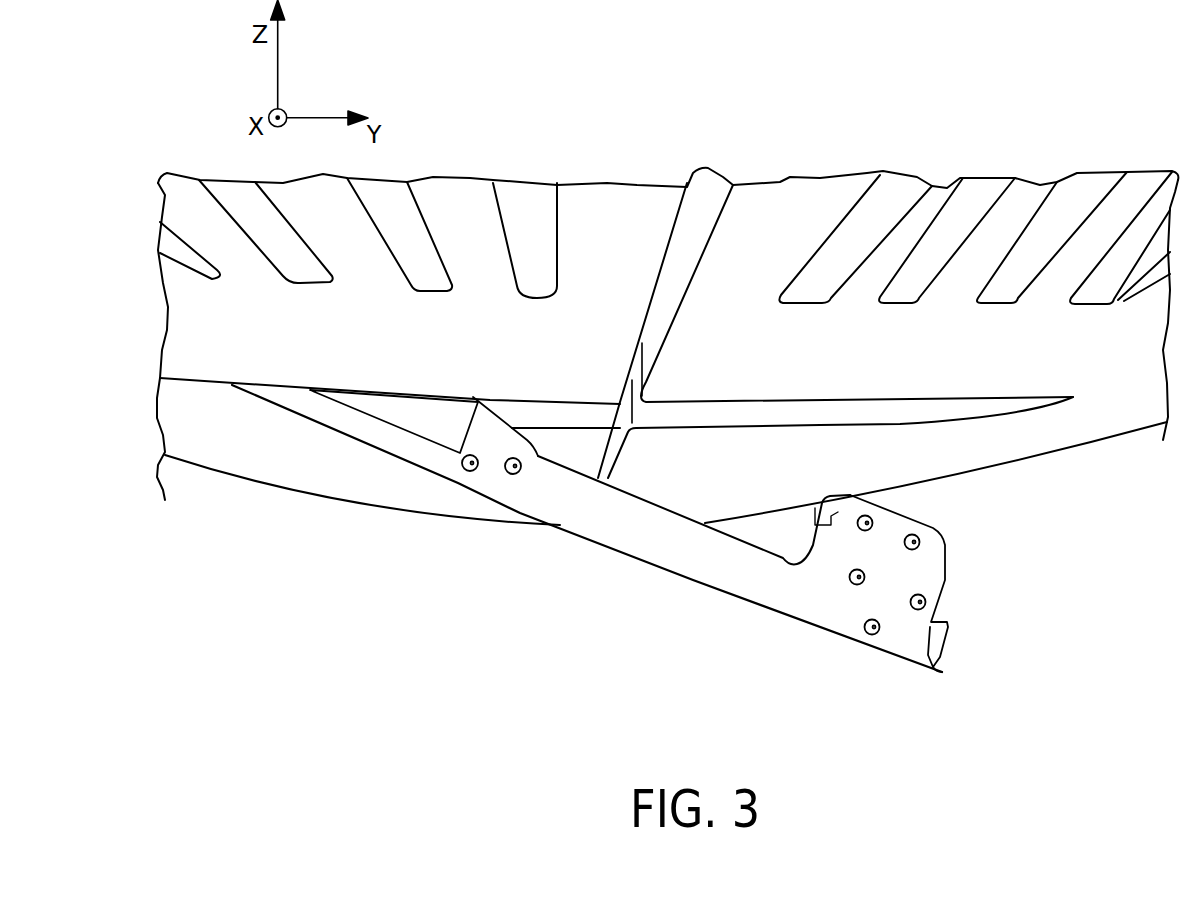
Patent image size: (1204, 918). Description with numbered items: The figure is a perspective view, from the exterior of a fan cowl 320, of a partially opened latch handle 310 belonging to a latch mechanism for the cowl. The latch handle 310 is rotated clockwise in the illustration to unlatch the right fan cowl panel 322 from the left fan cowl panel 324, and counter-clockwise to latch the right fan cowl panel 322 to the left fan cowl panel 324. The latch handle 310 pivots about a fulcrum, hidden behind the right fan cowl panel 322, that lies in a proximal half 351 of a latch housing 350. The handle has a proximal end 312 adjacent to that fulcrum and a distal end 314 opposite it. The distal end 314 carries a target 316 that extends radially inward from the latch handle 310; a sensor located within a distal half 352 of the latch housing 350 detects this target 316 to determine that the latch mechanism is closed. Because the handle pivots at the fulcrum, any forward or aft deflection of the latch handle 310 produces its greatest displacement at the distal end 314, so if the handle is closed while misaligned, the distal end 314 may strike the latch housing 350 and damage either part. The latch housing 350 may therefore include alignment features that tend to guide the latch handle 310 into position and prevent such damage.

The latch handle 310 is at (677, 573).
The proximal end 312 is at (288, 446).
The distal end 314 is at (855, 682).
The target 316 is at (946, 582).
The fan cowl 320 is at (1006, 117).
The right fan cowl panel 322 is at (377, 510).
The left fan cowl panel 324 is at (1112, 436).
The latch housing 350 is at (693, 353).
The proximal half 351 is at (463, 400).
The distal half 352 is at (756, 402).